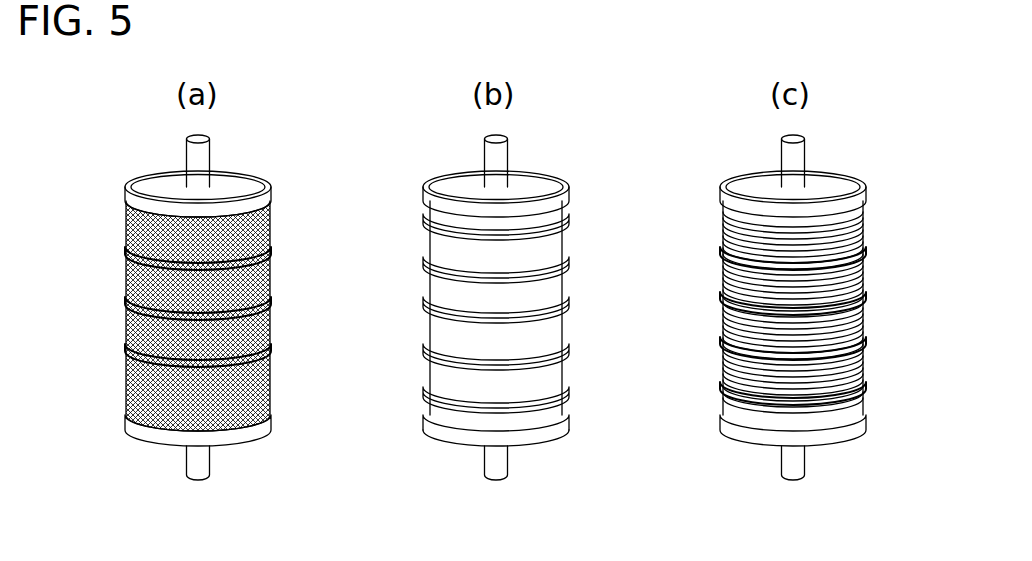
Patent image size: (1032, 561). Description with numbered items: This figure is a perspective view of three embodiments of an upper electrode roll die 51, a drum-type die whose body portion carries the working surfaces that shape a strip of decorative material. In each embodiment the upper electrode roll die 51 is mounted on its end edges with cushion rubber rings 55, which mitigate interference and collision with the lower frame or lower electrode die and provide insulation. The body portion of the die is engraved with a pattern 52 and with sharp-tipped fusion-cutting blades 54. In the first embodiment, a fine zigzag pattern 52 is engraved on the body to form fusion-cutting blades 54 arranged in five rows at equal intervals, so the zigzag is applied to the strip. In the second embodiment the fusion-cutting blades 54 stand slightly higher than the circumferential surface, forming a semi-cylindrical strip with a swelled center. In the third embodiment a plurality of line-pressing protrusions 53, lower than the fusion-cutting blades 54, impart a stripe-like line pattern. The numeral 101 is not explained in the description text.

The upper electrode roll die 51 is at (268, 172).
The pattern 52 is at (255, 252).
The line-pressing protrusions 53 is at (862, 368).
The fusion-cutting blades 54 is at (126, 263).
The cushion rubber rings 55 is at (126, 207).
The lower ring portion 101 is at (432, 432).